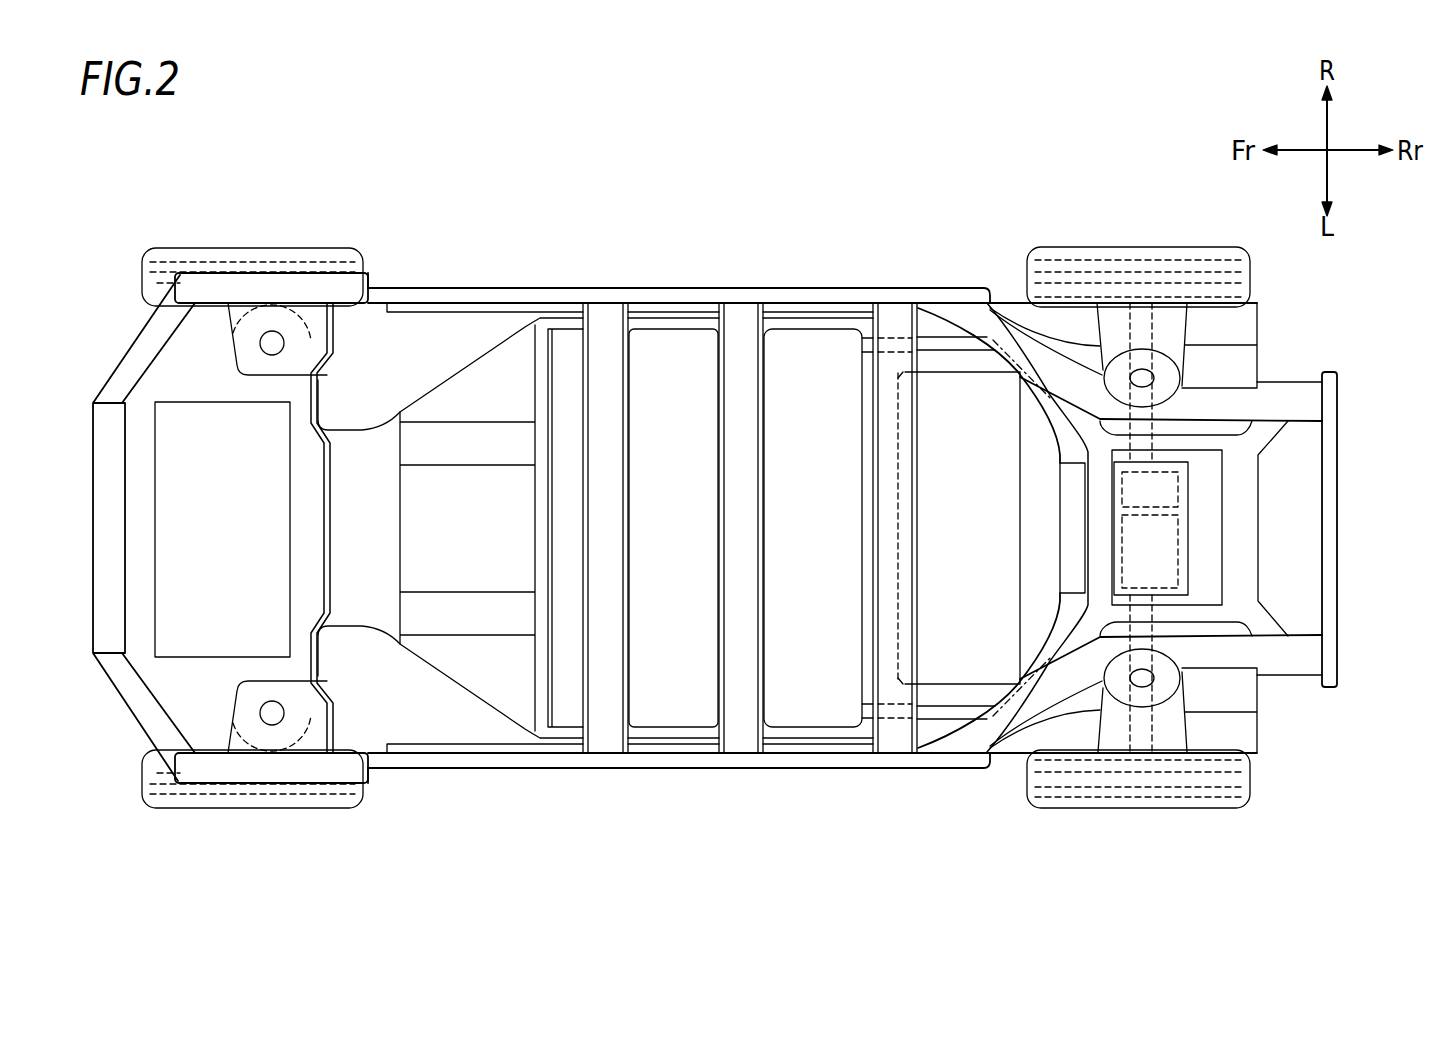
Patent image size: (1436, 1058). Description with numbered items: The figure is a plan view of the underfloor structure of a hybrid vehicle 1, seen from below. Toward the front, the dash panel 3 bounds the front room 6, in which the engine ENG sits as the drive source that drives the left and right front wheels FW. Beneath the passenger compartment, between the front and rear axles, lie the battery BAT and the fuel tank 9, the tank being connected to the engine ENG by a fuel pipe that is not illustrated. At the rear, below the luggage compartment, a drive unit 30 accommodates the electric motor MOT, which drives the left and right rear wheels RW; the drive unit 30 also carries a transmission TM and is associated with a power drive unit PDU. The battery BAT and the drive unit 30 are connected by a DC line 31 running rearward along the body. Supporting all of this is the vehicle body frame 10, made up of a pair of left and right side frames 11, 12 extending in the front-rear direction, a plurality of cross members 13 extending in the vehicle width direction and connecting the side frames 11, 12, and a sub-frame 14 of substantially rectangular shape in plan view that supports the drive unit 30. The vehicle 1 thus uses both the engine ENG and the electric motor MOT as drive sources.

The vehicle 1 is at (729, 236).
The dash panel 3 is at (318, 382).
The front room 6 is at (189, 698).
The fuel tank 9 is at (987, 675).
The vehicle body frame 10 is at (856, 286).
The side frame 11 is at (783, 287).
The side frame 12 is at (818, 770).
The cross member 13 is at (367, 455).
The sub-frame 14 is at (1205, 421).
The drive unit 30 is at (1190, 512).
The DC line 31 is at (943, 337).
The engine ENG is at (223, 400).
The front wheel FW is at (285, 246).
The rear wheel RW is at (1185, 247).
The battery BAT is at (568, 417).
The power drive unit PDU is at (1075, 583).
The transmission TM is at (1170, 488).
The electric motor MOT is at (1163, 550).